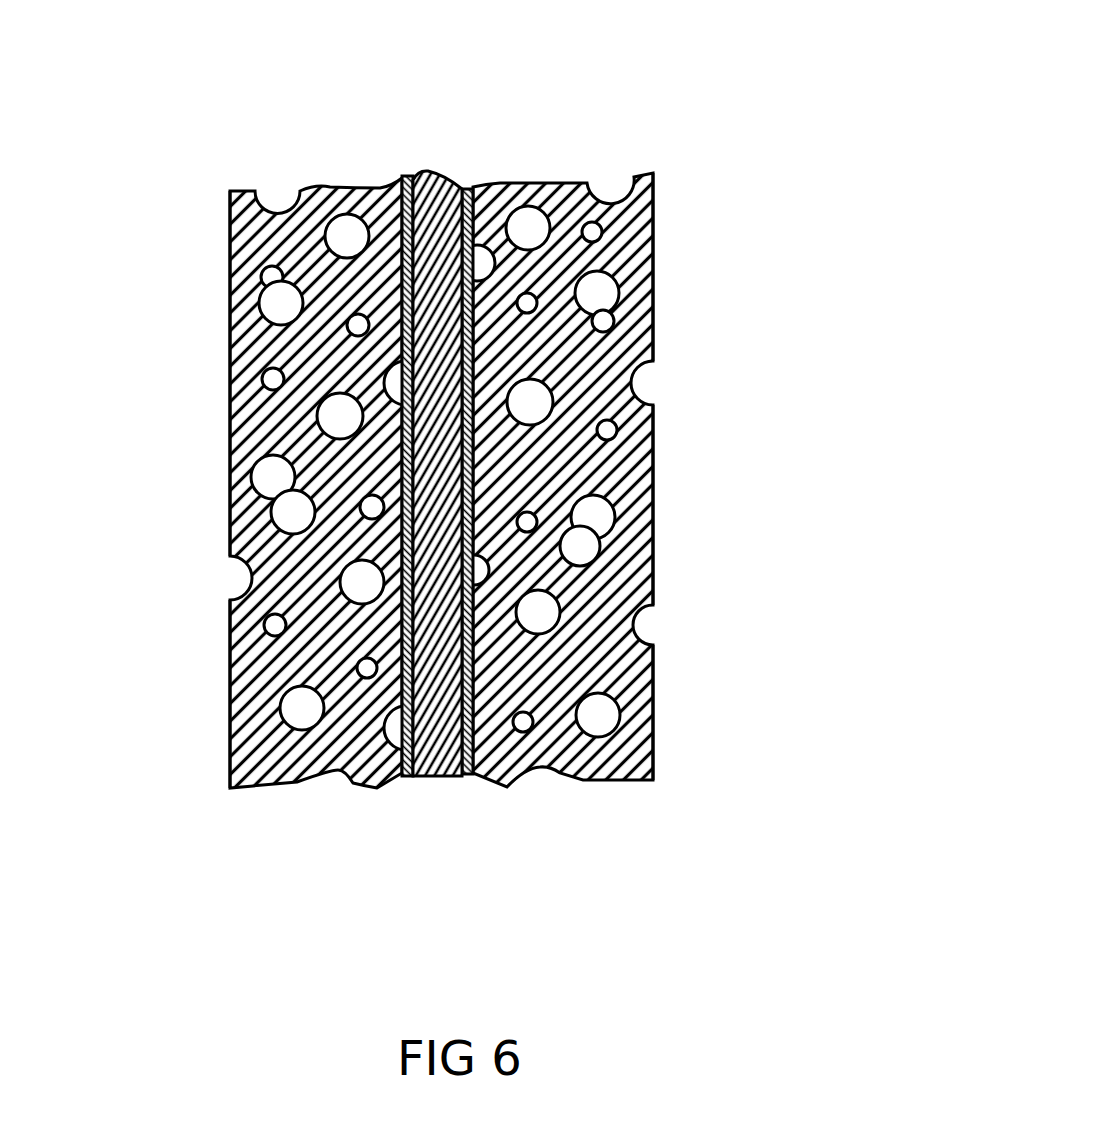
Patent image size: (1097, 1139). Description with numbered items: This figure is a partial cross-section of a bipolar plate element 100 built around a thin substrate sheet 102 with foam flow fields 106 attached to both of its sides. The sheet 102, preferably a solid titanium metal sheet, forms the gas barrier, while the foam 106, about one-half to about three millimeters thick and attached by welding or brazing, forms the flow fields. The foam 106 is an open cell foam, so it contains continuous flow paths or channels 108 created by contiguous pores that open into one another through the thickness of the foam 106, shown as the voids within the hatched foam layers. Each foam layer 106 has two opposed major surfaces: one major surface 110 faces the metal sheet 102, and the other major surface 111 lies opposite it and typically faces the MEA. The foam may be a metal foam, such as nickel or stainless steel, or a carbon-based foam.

The bipolar plate element 100 is at (448, 439).
The substrate sheet 102 is at (439, 183).
The foam flow field 106 is at (232, 315).
The flow paths 108 is at (295, 707).
The major surface 110 is at (402, 203).
The major surface 111 is at (226, 418).